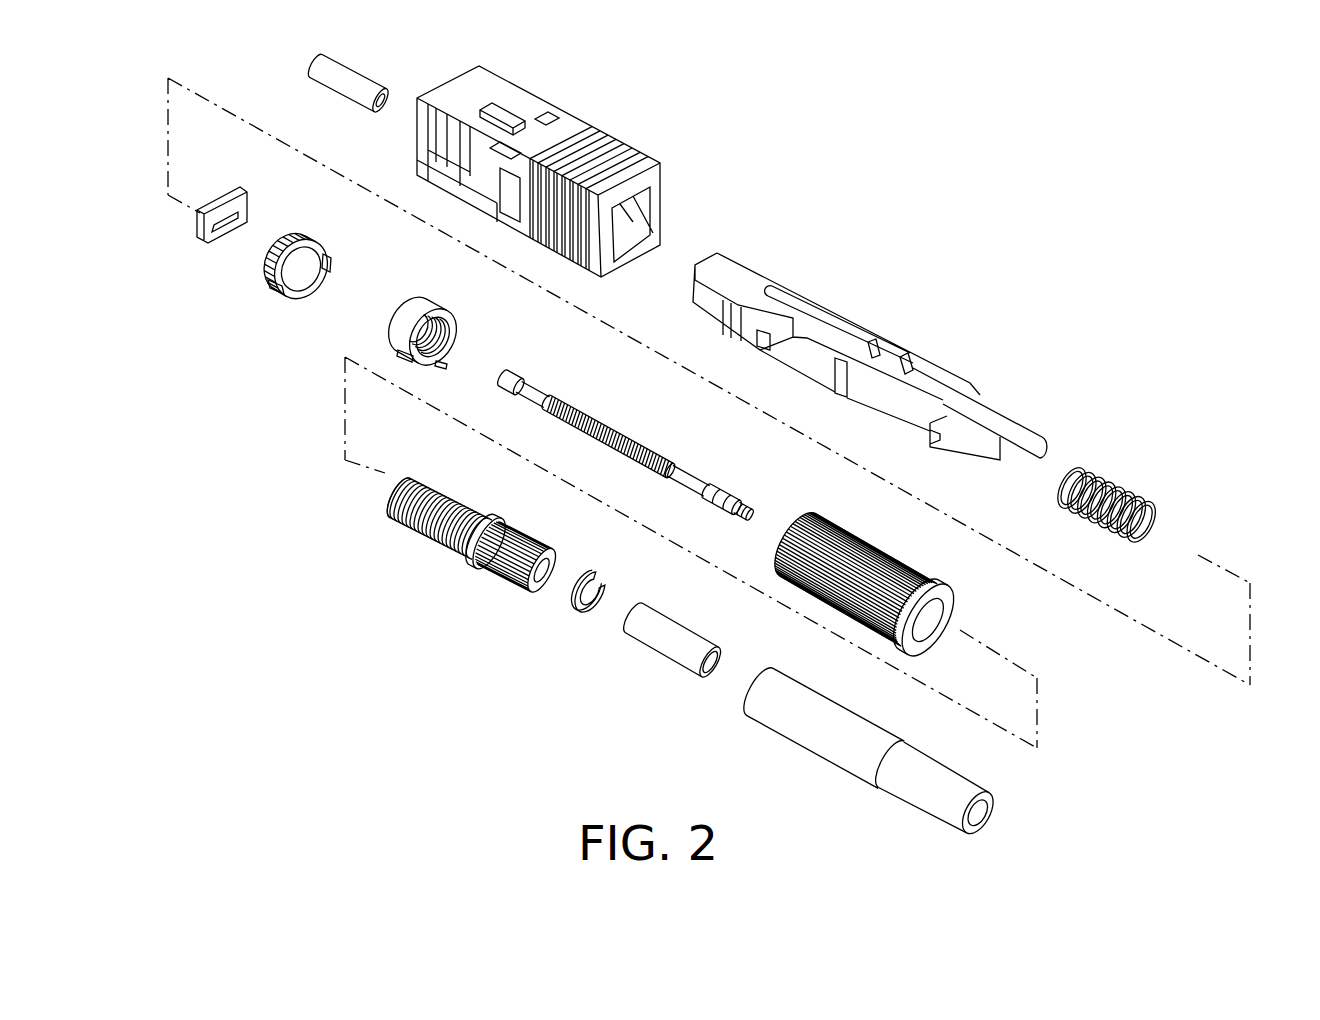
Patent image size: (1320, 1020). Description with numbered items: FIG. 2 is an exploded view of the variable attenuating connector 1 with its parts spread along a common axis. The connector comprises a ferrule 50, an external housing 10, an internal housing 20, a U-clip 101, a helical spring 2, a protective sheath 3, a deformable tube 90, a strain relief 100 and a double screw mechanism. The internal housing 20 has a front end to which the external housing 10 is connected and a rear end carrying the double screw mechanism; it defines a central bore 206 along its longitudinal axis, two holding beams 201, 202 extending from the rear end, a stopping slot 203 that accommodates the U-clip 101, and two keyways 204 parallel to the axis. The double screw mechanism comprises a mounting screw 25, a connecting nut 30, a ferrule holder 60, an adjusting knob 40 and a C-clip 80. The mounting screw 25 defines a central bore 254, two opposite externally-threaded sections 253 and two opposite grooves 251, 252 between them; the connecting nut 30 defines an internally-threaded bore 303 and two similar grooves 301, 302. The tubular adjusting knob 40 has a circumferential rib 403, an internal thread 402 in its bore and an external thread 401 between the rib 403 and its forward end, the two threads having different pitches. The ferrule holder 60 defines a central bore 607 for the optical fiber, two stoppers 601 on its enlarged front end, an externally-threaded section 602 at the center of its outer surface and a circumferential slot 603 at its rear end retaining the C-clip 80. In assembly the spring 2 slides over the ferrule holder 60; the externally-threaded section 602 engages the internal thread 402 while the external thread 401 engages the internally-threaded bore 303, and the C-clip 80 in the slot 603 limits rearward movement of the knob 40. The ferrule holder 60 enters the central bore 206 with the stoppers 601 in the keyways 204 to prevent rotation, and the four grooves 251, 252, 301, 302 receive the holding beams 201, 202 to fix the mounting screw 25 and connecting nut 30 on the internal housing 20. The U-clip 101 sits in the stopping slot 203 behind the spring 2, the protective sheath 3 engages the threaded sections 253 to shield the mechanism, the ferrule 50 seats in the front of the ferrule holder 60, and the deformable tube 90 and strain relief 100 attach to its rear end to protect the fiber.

The optical fiber connector 1 is at (1055, 212).
The helical spring 2 is at (1125, 478).
The protective sheath 3 is at (878, 545).
The external housing 10 is at (583, 119).
The internal housing 20 is at (897, 368).
The mounting screw 25 is at (308, 262).
The connecting nut 30 is at (443, 331).
The adjusting knob 40 is at (426, 526).
The ferrule 50 is at (357, 72).
The ferrule holder 60 is at (687, 424).
The C-clip 80 is at (577, 612).
The deformable tube 90 is at (662, 652).
The strain relief 100 is at (790, 733).
The U-clip 101 is at (215, 238).
The holding beam 201 is at (987, 457).
The holding beam 202 is at (1012, 428).
The stopping slot 203 is at (836, 380).
The keyway 204 is at (925, 372).
The central bore 206 is at (913, 368).
The groove 251 is at (270, 287).
The groove 252 is at (331, 262).
The externally-threaded section 253 is at (296, 238).
The central bore 254 is at (310, 272).
The groove 301 is at (398, 355).
The groove 302 is at (452, 324).
The internally-threaded bore 303 is at (443, 366).
The external thread 401 is at (432, 537).
The internal thread 402 is at (350, 495).
The circumferential rib 403 is at (476, 558).
The stopper 601 is at (506, 368).
The externally-threaded section 602 is at (623, 436).
The circumferential slot 603 is at (714, 487).
The central bore 607 is at (764, 509).